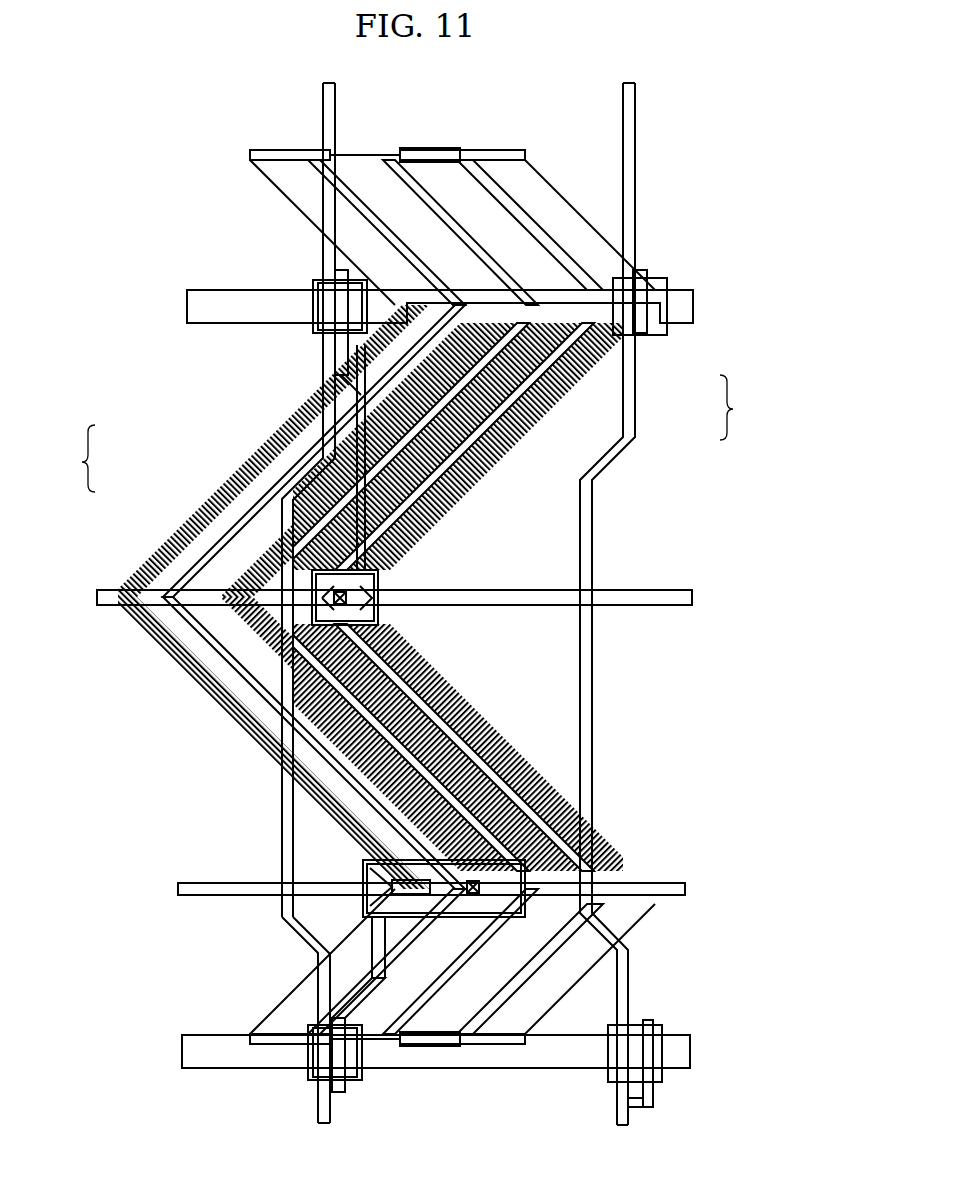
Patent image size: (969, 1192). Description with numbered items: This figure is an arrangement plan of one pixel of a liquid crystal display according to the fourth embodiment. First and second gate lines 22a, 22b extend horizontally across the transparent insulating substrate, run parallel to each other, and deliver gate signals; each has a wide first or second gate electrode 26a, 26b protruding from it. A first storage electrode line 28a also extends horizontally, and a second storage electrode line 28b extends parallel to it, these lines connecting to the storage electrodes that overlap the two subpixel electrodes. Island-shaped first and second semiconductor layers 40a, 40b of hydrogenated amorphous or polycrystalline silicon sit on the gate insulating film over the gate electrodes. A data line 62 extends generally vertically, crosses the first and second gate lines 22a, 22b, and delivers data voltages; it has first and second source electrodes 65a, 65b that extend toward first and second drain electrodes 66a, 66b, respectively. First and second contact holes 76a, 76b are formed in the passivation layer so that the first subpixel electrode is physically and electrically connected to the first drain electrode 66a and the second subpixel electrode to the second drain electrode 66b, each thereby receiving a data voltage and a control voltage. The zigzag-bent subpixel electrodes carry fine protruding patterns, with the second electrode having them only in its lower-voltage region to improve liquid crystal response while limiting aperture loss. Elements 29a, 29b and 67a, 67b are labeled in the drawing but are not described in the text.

The first gate line 22a is at (205, 290).
The second gate line 22b is at (200, 1068).
The first gate electrode 26a is at (318, 283).
The second gate electrode 26b is at (355, 1082).
The first storage electrode line 28a is at (665, 590).
The second storage electrode line 28b is at (180, 892).
The storage electrode 29a is at (400, 563).
The storage electrode 29b is at (363, 862).
The first semiconductor layer 40a is at (302, 314).
The second semiconductor layer 40b is at (331, 1046).
The data line 62 is at (250, 717).
The first source electrode 65a is at (316, 300).
The second source electrode 65b is at (365, 1065).
The first drain electrode 66a is at (345, 348).
The second drain electrode 66b is at (345, 990).
The drain electrode extension 67a is at (400, 547).
The drain electrode extension 67b is at (415, 925).
The first contact hole 76a is at (372, 600).
The second contact hole 76b is at (468, 880).